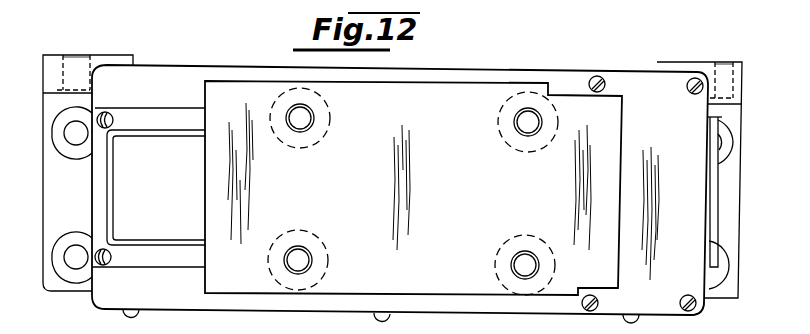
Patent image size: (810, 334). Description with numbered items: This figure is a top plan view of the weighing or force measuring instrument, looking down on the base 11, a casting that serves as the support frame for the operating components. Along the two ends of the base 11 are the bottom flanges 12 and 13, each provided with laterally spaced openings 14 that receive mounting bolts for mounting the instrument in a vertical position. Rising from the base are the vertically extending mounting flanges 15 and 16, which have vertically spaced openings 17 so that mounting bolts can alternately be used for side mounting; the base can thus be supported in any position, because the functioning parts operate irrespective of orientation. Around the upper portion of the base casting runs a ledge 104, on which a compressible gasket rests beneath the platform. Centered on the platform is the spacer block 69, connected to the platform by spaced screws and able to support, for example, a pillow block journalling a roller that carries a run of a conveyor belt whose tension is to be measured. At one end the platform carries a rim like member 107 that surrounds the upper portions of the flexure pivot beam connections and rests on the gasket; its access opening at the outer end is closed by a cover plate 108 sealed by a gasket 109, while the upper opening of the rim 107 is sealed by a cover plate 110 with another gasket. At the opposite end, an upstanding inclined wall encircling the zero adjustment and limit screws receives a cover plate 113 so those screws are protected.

The base 11 is at (54, 296).
The bottom flange 12 is at (47, 178).
The bottom flange 13 is at (733, 288).
The openings 14 is at (77, 135).
The mounting flange 15 is at (45, 60).
The mounting flange 16 is at (735, 63).
The openings 17 is at (96, 41).
The spacer block 69 is at (463, 192).
The ledge 104 is at (168, 311).
The rim like member 107 is at (694, 312).
The cover plate 108 is at (720, 198).
The gasket 109 is at (710, 172).
The cover plate 110 is at (678, 158).
The cover plate 113 is at (142, 235).